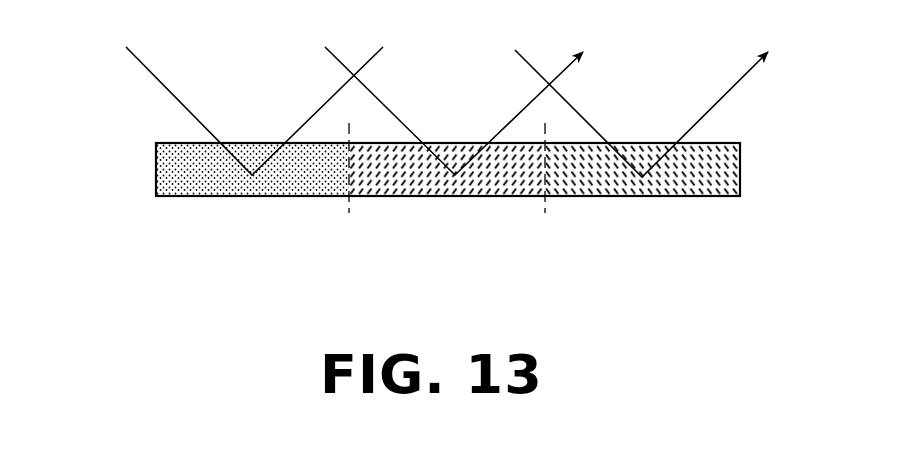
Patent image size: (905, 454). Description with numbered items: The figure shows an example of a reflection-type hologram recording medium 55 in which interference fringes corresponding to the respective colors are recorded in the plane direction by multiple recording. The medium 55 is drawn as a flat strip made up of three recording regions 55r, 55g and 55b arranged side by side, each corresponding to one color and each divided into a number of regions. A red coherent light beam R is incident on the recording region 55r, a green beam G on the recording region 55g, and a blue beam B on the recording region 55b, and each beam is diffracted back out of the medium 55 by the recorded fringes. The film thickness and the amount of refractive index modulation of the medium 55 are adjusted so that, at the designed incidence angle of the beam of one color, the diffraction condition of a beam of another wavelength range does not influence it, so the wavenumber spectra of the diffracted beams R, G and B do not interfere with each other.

The hologram recording medium 55 is at (154, 175).
The recording region for red 55r is at (258, 188).
The recording region for green 55g is at (472, 193).
The recording region for blue 55b is at (638, 195).
The red light R is at (248, 95).
The green light G is at (447, 95).
The blue light B is at (635, 96).